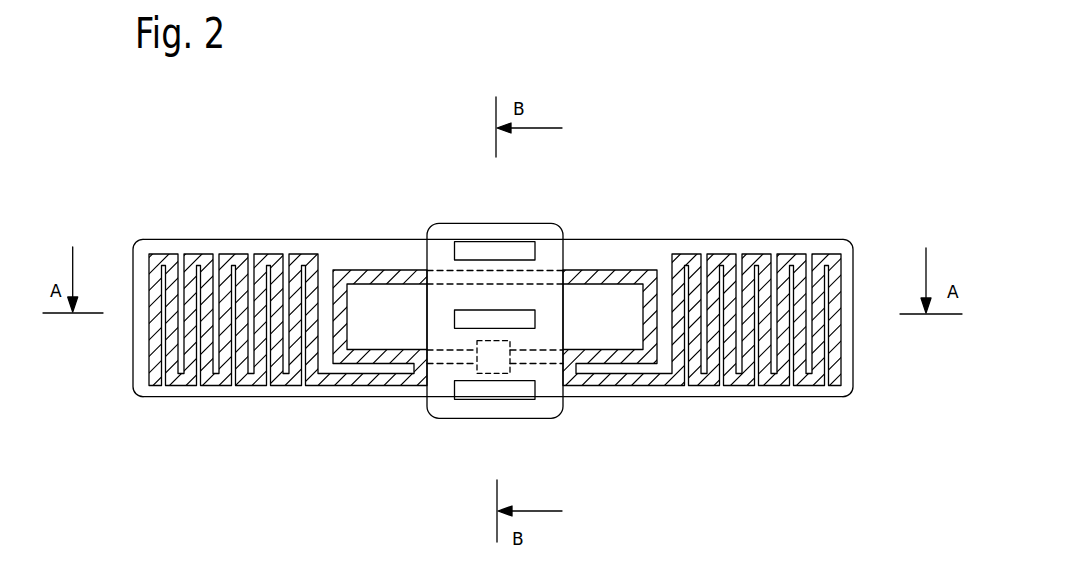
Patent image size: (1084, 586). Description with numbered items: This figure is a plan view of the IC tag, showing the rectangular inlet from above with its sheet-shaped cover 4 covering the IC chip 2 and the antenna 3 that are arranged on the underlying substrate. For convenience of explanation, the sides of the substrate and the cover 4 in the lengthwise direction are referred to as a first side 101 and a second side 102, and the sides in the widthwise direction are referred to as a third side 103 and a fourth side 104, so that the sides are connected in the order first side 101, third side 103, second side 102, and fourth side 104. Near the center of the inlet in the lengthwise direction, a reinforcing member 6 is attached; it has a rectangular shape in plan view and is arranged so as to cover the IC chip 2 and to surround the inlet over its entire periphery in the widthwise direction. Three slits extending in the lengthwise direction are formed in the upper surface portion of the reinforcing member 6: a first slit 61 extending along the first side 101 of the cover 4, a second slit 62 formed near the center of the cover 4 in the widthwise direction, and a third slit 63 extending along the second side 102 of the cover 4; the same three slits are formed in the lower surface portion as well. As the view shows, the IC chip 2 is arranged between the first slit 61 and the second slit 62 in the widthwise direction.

The IC chip 2 is at (510, 358).
The antenna 3 is at (491, 319).
The cover 4 is at (242, 403).
The reinforcing member 6 is at (537, 310).
The first slit 61 is at (497, 393).
The second slit 62 is at (518, 318).
The third slit 63 is at (500, 245).
The first side 101 is at (727, 397).
The second side 102 is at (793, 238).
The third side 103 is at (130, 308).
The fourth side 104 is at (853, 315).